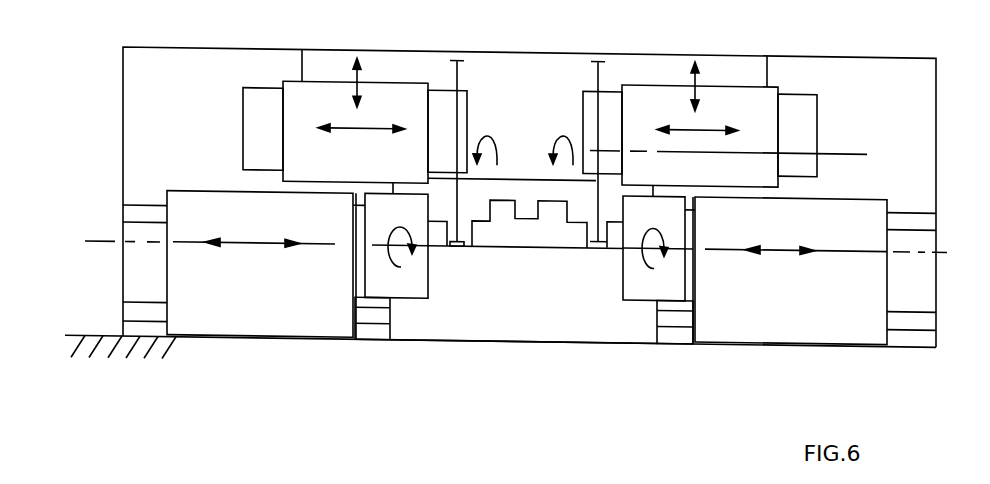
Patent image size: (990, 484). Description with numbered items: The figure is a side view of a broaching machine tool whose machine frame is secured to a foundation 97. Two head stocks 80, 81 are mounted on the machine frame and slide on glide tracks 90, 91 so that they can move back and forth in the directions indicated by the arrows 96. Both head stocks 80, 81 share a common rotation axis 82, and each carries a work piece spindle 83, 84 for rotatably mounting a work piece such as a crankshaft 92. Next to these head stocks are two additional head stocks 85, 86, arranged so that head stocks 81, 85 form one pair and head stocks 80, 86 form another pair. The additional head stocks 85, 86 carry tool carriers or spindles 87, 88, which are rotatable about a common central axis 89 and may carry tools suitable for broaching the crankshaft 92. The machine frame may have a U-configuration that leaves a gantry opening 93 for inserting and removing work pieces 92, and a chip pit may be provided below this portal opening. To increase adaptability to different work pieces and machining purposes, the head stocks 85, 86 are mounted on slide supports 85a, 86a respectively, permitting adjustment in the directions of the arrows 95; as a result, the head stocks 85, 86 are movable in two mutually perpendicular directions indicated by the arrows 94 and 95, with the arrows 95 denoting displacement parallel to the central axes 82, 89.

The head stock 80 is at (223, 322).
The head stock 81 is at (757, 324).
The common rotation axis 82 is at (489, 243).
The work piece spindle 83 is at (365, 267).
The work piece spindle 84 is at (692, 269).
The head stock 85 is at (763, 91).
The slide support 85a is at (727, 59).
The head stock 86 is at (402, 86).
The slide support 86a is at (313, 55).
The tool carrier 87 is at (458, 143).
The tool carrier 88 is at (583, 154).
The common central axis 89 is at (828, 142).
The glide track 90 is at (138, 317).
The glide track 91 is at (922, 312).
The crankshaft 92 is at (550, 195).
The gantry opening 93 is at (477, 329).
The arrows 94 is at (361, 124).
The arrows 95 is at (360, 73).
The arrows 96 is at (245, 247).
The foundation 97 is at (98, 336).